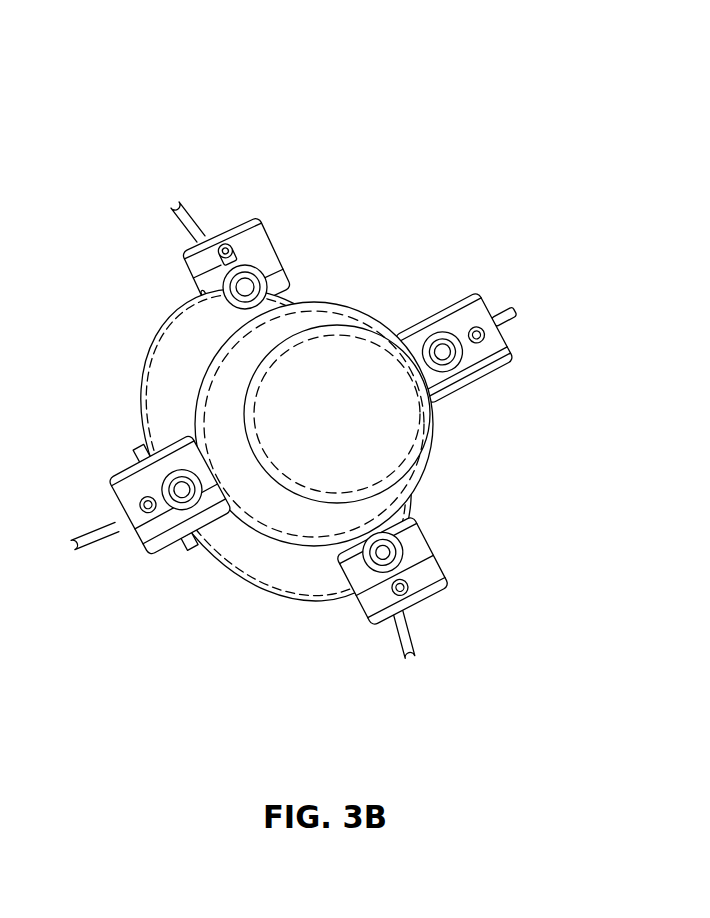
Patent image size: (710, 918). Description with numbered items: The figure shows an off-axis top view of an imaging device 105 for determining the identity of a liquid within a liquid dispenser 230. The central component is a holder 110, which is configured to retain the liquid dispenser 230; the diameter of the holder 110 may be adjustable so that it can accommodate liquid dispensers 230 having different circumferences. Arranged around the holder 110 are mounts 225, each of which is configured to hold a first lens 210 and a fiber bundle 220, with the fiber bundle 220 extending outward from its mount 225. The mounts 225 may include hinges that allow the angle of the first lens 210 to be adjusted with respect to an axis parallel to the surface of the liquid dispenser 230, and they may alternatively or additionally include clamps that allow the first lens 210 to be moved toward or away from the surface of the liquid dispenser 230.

The imaging device 105 is at (128, 142).
The holder 110 is at (240, 585).
The first lens 210 is at (260, 280).
The fiber bundle 220 is at (200, 220).
The mounts 225 is at (262, 250).
The liquid dispenser 230 is at (453, 435).